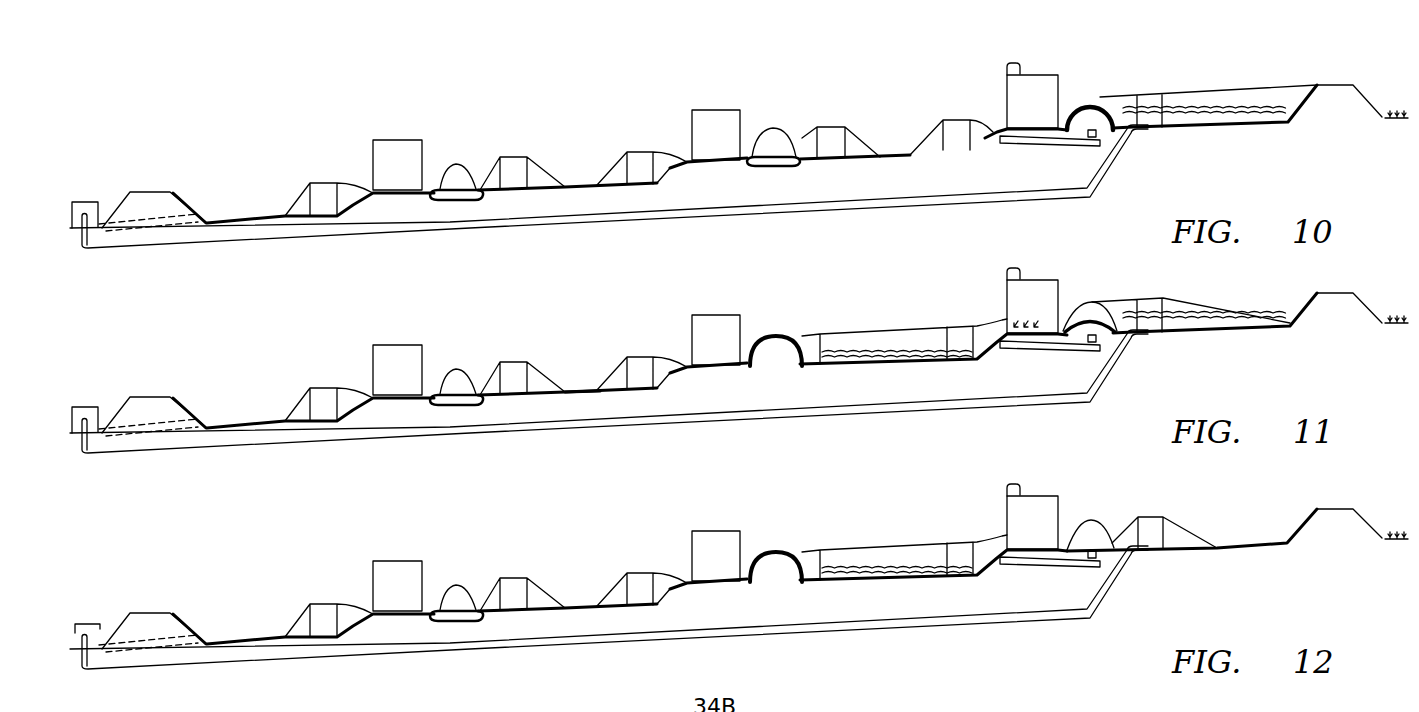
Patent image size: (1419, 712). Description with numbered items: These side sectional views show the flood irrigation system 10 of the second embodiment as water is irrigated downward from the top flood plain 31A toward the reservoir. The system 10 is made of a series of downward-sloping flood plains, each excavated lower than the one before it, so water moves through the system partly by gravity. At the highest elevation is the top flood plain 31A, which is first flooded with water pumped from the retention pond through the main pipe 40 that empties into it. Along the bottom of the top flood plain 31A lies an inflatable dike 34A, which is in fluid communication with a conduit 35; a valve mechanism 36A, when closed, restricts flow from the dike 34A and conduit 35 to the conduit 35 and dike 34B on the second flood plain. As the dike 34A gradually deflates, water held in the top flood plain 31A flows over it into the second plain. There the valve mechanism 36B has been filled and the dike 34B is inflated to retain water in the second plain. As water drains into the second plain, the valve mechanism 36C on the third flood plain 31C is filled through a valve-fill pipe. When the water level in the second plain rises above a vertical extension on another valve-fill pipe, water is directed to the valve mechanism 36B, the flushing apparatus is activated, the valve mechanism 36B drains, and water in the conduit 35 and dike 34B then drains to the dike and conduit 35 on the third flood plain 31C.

In FIG. 10, the flood irrigation system 10 is at (233, 135).
In FIG. 10, the top flood plain 31A is at (1288, 157).
In FIG. 11, the top flood plain 31A is at (933, 298).
In FIG. 11, the third flood plain 31C is at (536, 350).
In FIG. 10, the dike 34A is at (1087, 100).
In FIG. 10, the dike 34B is at (770, 128).
In FIG. 11, the dike 34B is at (746, 308).
In FIG. 12, the dike 34B is at (746, 523).
In FIG. 10, the conduit 35 is at (868, 136).
In FIG. 11, the conduit 35 is at (902, 328).
In FIG. 10, the valve mechanism 36A is at (1020, 93).
In FIG. 11, the valve mechanism 36A is at (995, 300).
In FIG. 11, the valve mechanism 36B is at (670, 321).
In FIG. 12, the valve mechanism 36B is at (670, 538).
In FIG. 11, the valve mechanism 36C is at (357, 363).
In FIG. 10, the main pipe 40 is at (257, 237).
In FIG. 11, the main pipe 40 is at (609, 391).